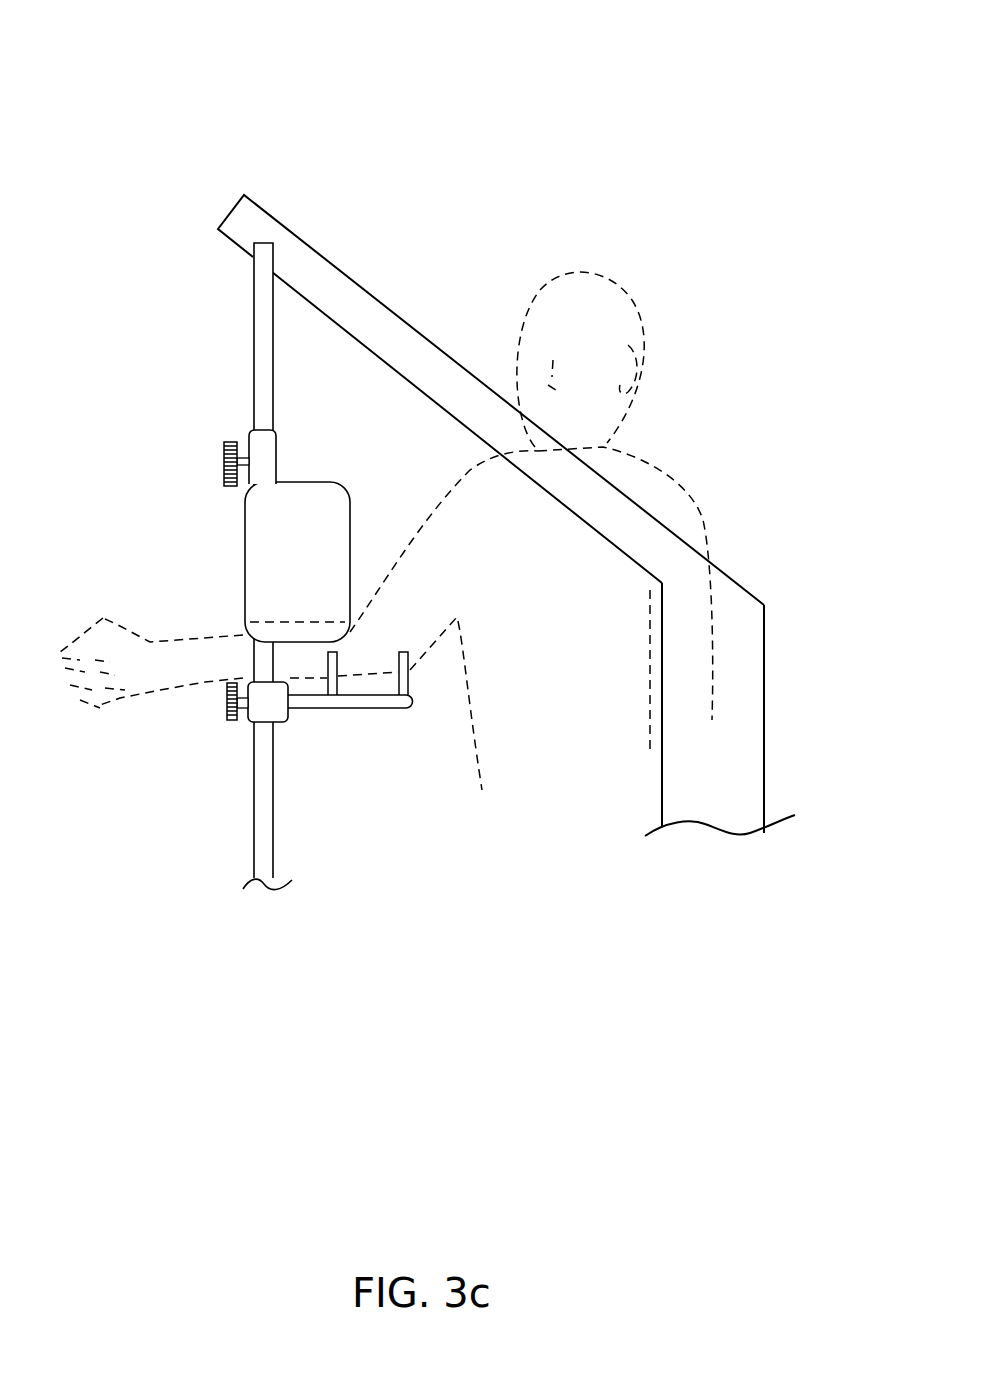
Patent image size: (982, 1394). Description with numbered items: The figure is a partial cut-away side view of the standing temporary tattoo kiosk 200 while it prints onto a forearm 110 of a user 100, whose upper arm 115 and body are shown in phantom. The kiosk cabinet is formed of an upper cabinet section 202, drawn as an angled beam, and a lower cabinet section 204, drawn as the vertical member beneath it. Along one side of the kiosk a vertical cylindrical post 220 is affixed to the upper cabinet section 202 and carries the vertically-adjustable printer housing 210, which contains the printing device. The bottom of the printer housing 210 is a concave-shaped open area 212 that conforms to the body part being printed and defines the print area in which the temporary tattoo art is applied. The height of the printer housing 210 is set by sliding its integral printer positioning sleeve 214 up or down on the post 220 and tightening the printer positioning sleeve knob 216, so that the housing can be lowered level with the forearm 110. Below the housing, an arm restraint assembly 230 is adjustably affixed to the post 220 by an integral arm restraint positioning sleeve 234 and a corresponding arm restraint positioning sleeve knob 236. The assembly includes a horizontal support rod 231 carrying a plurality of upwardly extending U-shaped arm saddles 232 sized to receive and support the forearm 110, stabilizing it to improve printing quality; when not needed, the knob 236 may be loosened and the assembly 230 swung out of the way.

The standing temporary tattoo kiosk 200 is at (676, 155).
The upper cabinet section 202 is at (357, 303).
The lower cabinet section 204 is at (712, 785).
The vertical cylindrical post 220 is at (262, 355).
The printer positioning sleeve 214 is at (263, 440).
The printer positioning sleeve knob 216 is at (226, 470).
The printer housing 210 is at (245, 560).
The concave-shaped open area 212 is at (288, 622).
The forearm 110 is at (208, 632).
The upper arm 115 is at (465, 505).
The user 100 is at (628, 298).
The arm restraint assembly 230 is at (389, 710).
The horizontal support rod 231 is at (325, 708).
The arm saddles 232 is at (406, 652).
The arm restraint positioning sleeve 234 is at (255, 710).
The arm restraint positioning sleeve knob 236 is at (232, 700).